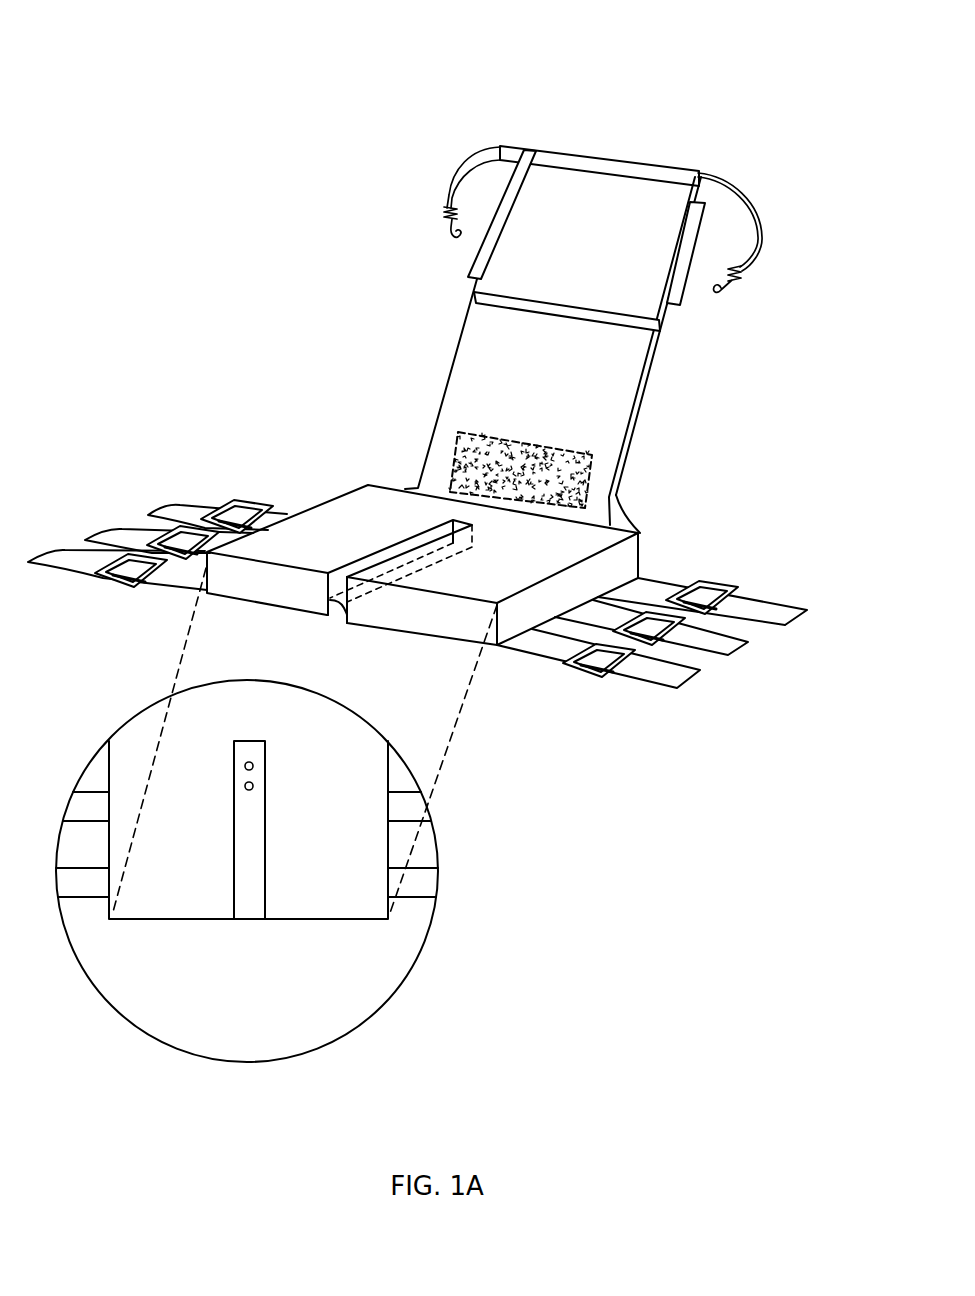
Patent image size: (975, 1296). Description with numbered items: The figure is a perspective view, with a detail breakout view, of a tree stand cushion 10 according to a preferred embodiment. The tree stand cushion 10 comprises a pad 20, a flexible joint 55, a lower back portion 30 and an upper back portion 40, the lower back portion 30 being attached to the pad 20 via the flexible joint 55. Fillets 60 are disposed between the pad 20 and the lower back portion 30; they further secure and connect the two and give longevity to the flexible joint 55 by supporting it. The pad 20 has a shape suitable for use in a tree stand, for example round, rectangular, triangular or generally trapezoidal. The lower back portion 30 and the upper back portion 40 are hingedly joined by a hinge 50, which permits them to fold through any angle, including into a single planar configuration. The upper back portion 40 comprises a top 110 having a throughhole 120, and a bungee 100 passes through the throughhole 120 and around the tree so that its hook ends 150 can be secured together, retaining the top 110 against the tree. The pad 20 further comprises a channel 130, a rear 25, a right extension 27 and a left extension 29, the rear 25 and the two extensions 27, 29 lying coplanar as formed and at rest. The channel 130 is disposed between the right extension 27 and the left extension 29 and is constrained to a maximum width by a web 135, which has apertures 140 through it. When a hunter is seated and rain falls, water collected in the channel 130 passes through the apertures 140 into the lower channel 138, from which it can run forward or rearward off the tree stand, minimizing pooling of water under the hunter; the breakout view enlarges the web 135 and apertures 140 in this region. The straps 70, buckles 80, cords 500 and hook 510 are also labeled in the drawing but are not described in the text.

The tree stand cushion 10 is at (215, 246).
The pad 20 is at (562, 552).
The rear 25 is at (478, 513).
The right extension 27 is at (370, 518).
The left extension 29 is at (517, 542).
The lower back portion 30 is at (611, 294).
The upper back portion 40 is at (190, 510).
The hinge 50 is at (623, 320).
The flexible joint 55 is at (460, 433).
The fillets 60 is at (623, 522).
The right straps 70 is at (755, 610).
The buckles 80 is at (125, 588).
The bungee 100 is at (756, 248).
The top 110 is at (617, 165).
The throughhole 120 is at (704, 176).
The channel 130 is at (337, 578).
The web 135 is at (333, 612).
The lower channel 138 is at (347, 618).
The apertures 140 is at (252, 792).
The hook ends 150 is at (722, 290).
The bungee cords 500 is at (631, 275).
The hook 510 is at (513, 550).